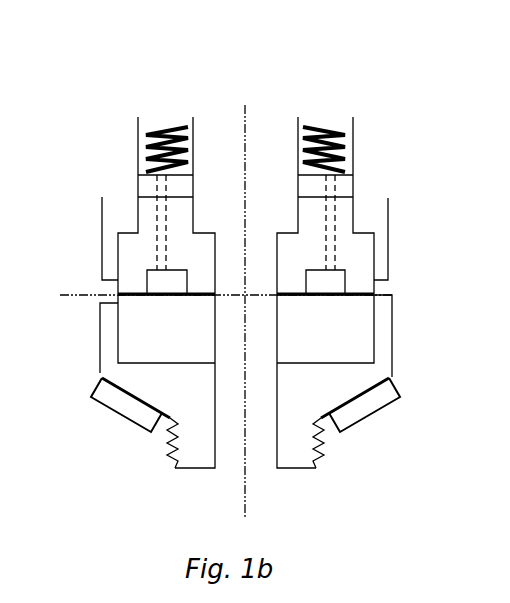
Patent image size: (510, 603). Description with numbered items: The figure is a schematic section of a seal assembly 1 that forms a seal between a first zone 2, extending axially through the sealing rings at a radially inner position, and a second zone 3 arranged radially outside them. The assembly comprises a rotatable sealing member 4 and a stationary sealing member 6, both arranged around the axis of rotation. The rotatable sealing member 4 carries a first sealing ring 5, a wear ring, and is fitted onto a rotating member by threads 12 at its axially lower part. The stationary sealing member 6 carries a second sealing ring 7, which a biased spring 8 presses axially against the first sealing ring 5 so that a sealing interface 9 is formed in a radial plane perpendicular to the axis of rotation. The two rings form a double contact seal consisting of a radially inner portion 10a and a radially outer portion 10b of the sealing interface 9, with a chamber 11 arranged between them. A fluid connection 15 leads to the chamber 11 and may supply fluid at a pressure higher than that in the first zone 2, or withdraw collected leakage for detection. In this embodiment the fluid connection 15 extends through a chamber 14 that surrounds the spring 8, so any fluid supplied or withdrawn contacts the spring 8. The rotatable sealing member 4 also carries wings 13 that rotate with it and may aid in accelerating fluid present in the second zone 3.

The seal assembly 1 is at (102, 100).
The first zone 2 is at (232, 326).
The second zone 3 is at (92, 292).
The rotatable sealing member 4 is at (110, 368).
The first sealing ring 5 is at (358, 346).
The stationary sealing member 6 is at (110, 223).
The second sealing ring 7 is at (367, 242).
The spring 8 is at (328, 133).
The sealing interface 9 is at (128, 300).
The radially inner portion 10a is at (313, 297).
The radially outer portion 10b is at (377, 298).
The chamber 11 is at (155, 280).
The threads 12 is at (327, 451).
The wings 13 is at (125, 410).
The chamber 14 is at (350, 133).
The fluid connection 15 is at (335, 213).